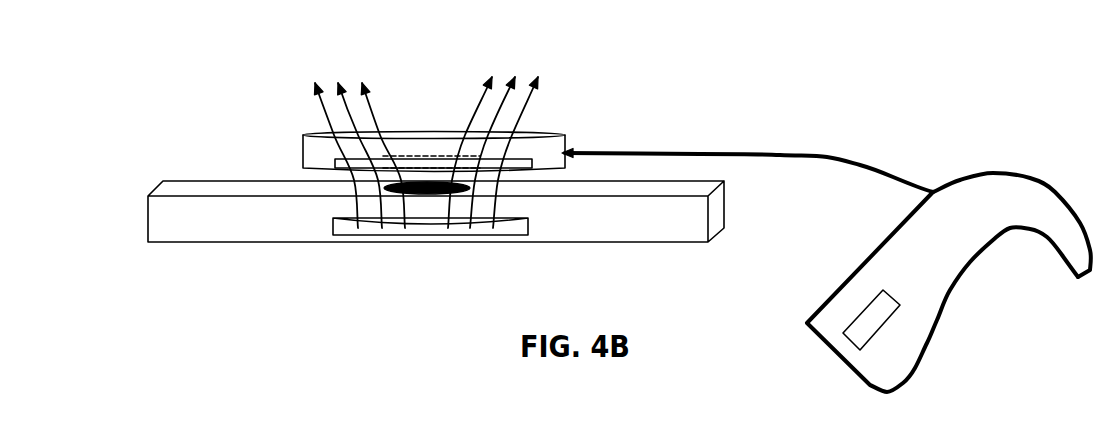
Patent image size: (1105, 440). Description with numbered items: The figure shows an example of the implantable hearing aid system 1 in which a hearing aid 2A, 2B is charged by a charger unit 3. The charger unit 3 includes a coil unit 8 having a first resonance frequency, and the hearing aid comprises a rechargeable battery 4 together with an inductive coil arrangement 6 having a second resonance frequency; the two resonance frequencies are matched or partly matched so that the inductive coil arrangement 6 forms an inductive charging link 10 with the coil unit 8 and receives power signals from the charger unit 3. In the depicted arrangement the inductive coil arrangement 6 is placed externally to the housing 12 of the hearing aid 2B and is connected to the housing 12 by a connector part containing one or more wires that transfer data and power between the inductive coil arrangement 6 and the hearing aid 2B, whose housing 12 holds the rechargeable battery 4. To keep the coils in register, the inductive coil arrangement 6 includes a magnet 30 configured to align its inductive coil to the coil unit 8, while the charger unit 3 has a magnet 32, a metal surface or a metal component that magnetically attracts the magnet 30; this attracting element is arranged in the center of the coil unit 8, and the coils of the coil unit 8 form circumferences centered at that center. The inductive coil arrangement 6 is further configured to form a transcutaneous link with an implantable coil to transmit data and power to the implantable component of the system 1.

The implantable hearing aid system 1 is at (973, 68).
The hearing aid 2A is at (444, 131).
The hearing aid 2B is at (948, 250).
The housing 12 is at (948, 250).
The charger unit 3 is at (160, 182).
The rechargeable battery 4 is at (850, 317).
The inductive coil arrangement 6 is at (533, 158).
The coil unit 8 is at (513, 235).
The inductive charging link 10 is at (480, 92).
The magnet 30 is at (467, 150).
The magnet 32 is at (470, 187).